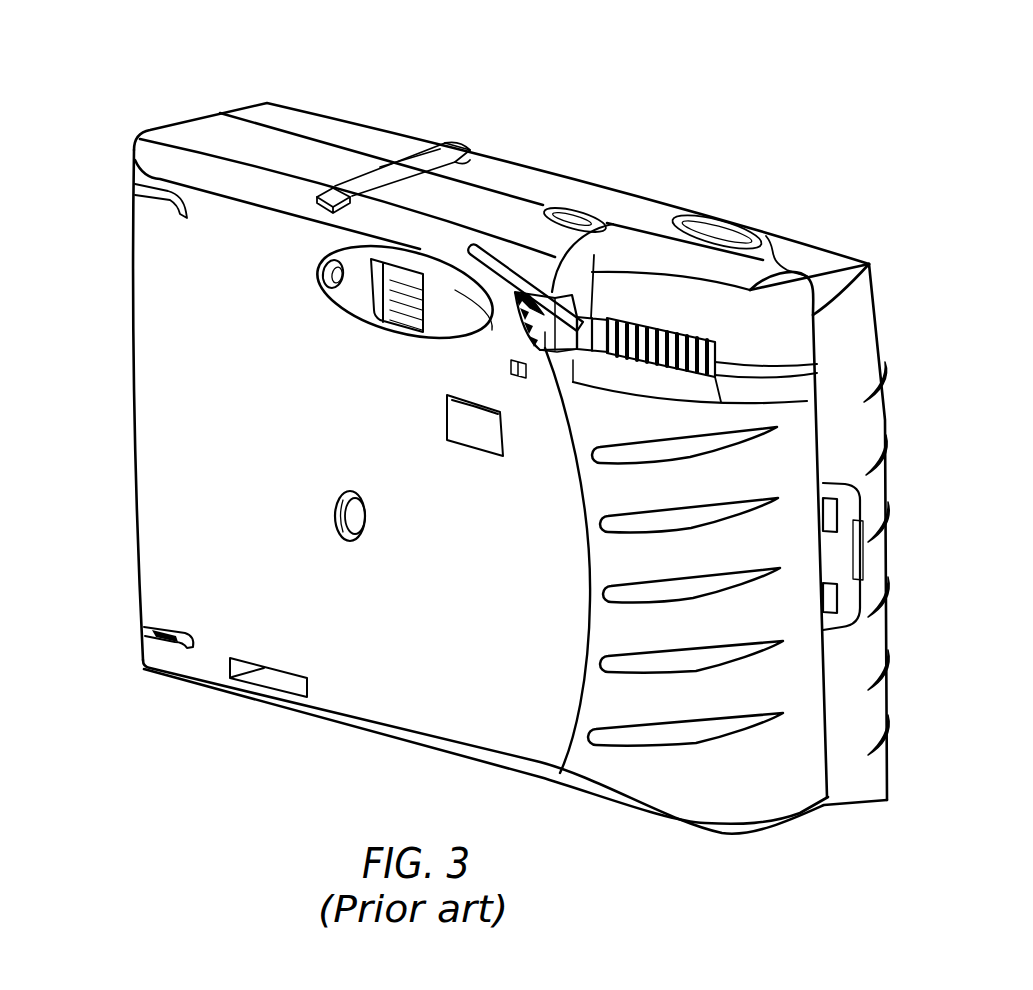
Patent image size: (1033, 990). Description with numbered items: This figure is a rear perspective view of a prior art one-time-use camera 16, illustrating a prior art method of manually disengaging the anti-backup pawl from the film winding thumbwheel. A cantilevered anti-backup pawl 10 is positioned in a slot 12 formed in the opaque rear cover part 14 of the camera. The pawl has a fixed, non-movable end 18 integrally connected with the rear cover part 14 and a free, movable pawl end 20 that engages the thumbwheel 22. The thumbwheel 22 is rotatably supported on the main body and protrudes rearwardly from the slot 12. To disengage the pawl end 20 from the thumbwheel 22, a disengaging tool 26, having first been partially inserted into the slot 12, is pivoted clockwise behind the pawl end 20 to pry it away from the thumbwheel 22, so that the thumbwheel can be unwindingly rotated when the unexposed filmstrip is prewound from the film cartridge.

The anti-backup pawl 10 is at (546, 348).
The slot 12 is at (597, 290).
The rear cover part 14 is at (150, 335).
The one-time-use camera 16 is at (187, 103).
The fixed end 18 is at (512, 338).
The pawl end 20 is at (572, 350).
The thumbwheel 22 is at (670, 337).
The disengaging tool 26 is at (496, 257).